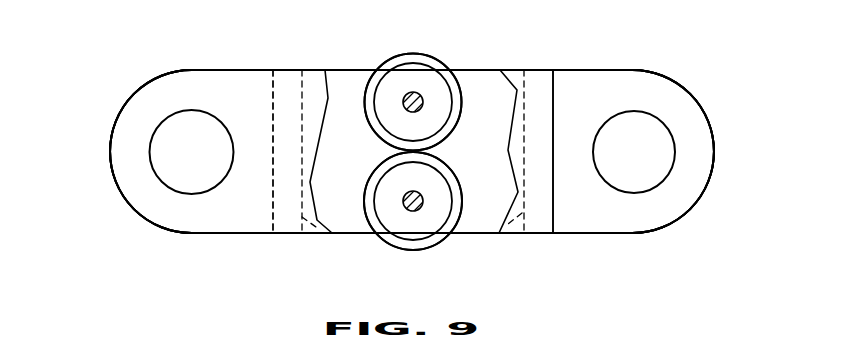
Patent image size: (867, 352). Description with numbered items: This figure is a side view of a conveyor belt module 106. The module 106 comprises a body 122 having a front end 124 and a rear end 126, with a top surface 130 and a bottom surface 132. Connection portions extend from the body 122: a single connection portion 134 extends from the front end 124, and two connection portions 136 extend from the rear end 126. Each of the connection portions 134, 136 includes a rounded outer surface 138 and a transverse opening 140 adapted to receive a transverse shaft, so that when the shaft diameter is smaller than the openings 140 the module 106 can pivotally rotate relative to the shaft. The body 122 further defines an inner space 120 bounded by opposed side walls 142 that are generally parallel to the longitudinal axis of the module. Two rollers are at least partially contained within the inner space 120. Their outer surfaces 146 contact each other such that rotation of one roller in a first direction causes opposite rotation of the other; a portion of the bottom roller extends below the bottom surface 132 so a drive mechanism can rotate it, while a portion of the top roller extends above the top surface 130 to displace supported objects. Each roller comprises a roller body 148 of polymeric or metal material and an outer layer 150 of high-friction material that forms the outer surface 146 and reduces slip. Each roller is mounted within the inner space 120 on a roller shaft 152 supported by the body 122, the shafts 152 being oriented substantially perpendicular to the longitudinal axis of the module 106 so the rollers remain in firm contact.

The conveyor belt module 106 is at (694, 69).
The inner space 120 is at (337, 80).
The body 122 is at (225, 81).
The front end 124 is at (582, 91).
The rear end 126 is at (250, 218).
The top surface 130 is at (484, 70).
The bottom surface 132 is at (563, 233).
The connection portion 134 is at (688, 187).
The connection portions 136 is at (138, 185).
The rounded outer surface 138 is at (132, 95).
The transverse opening 140 is at (177, 153).
The side walls 142 is at (304, 218).
The outer surfaces 146 is at (392, 53).
The roller body 148 is at (388, 126).
The outer layer 150 is at (442, 67).
The roller shaft 152 is at (419, 110).